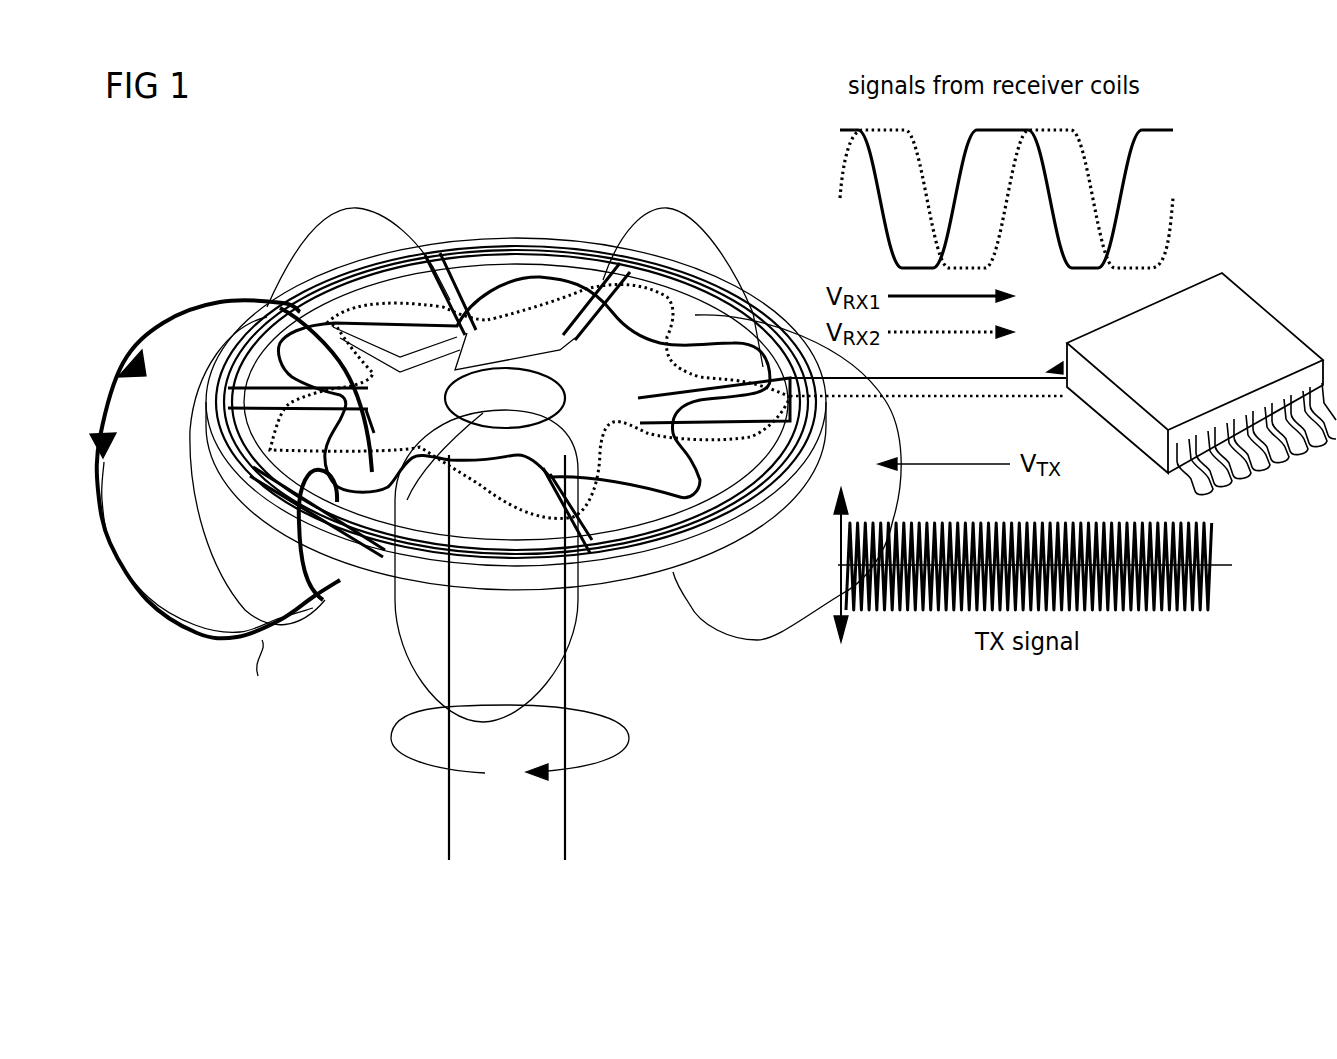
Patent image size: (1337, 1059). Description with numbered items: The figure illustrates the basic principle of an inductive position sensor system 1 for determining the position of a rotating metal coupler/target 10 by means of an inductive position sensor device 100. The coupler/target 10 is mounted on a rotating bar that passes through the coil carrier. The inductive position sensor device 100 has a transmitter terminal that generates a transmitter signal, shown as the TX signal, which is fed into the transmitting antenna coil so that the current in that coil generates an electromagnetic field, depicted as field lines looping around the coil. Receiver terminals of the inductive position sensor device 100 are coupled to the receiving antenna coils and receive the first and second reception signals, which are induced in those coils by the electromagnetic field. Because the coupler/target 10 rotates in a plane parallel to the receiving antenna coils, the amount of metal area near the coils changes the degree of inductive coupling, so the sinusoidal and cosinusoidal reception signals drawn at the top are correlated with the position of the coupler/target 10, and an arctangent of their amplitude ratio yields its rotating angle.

The system 1 is at (660, 149).
The rotating metal coupler/target 10 is at (478, 283).
The inductive position sensor device 100 is at (1202, 298).